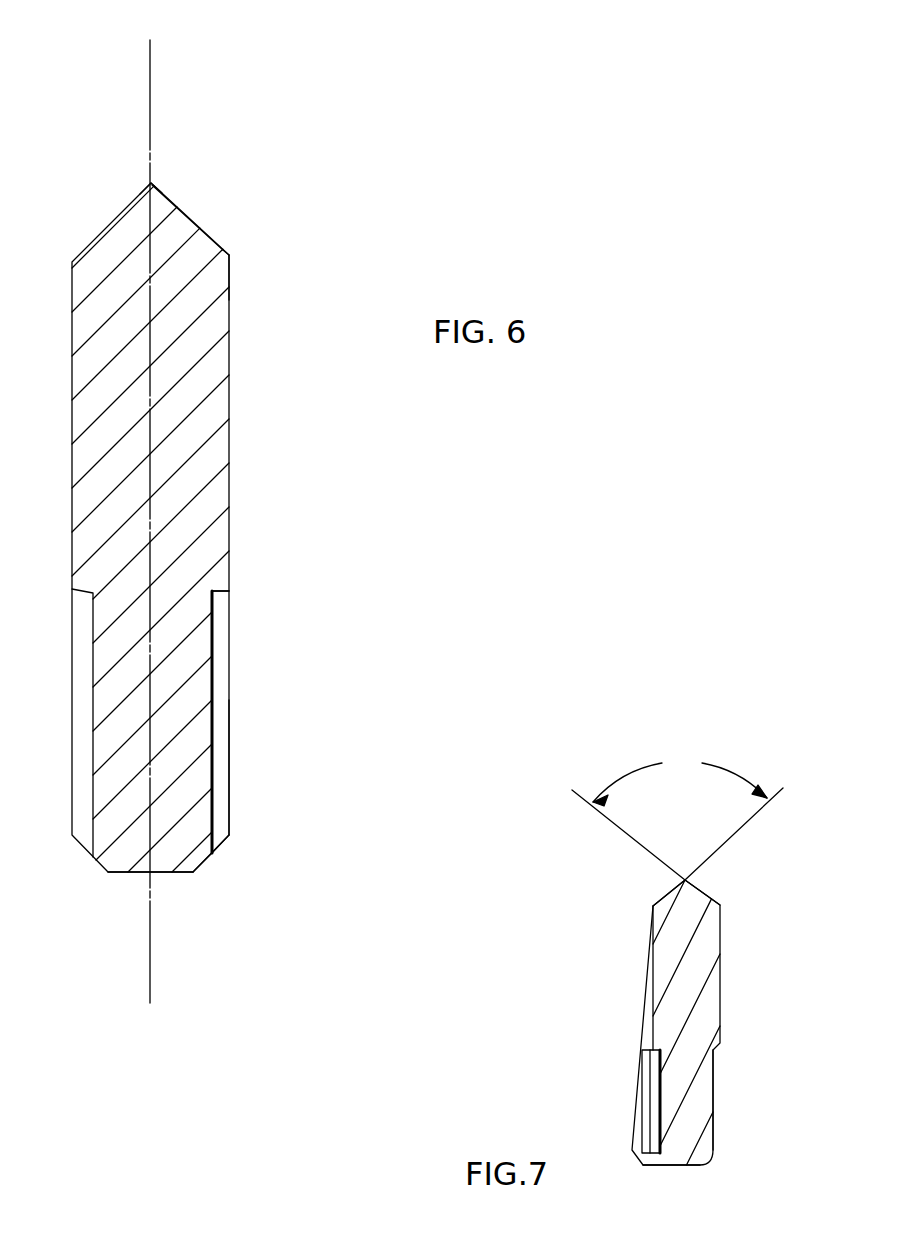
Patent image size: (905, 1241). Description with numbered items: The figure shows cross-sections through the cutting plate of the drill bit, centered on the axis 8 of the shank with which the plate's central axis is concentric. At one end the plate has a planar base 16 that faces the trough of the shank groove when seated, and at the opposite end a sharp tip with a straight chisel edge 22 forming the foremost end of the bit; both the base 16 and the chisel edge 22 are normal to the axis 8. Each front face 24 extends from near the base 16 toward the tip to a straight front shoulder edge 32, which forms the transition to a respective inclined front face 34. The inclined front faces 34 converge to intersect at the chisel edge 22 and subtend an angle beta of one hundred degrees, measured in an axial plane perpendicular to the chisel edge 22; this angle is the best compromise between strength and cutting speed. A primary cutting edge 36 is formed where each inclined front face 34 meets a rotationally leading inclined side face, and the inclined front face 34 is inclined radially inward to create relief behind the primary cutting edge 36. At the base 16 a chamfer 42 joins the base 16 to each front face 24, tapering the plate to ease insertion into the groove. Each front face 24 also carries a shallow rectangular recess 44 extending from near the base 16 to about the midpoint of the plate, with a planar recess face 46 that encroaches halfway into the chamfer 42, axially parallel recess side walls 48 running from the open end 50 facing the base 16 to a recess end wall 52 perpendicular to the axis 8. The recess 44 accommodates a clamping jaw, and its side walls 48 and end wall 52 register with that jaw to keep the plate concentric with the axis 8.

In FIG. 6, the axis 8 is at (206, 506).
In FIG. 6, the base 16 is at (122, 872).
In FIG. 7, the base 16 is at (680, 1167).
In FIG. 6, the chisel edge 22 is at (151, 183).
In FIG. 7, the chisel edge 22 is at (700, 874).
In FIG. 6, the front face 24 is at (229, 447).
In FIG. 7, the front face 24 is at (722, 1008).
In FIG. 6, the front shoulder edge 32 is at (232, 258).
In FIG. 6, the inclined front face 34 is at (226, 249).
In FIG. 7, the inclined front face 34 is at (663, 897).
In FIG. 6, the primary cutting edge 36 is at (213, 232).
In FIG. 6, the chamfer 42 is at (203, 867).
In FIG. 6, the recess 44 is at (252, 675).
In FIG. 6, the recess face 46 is at (215, 728).
In FIG. 7, the recess face 46 is at (713, 1103).
In FIG. 6, the recess side wall 48 is at (222, 805).
In FIG. 6, the open end 50 is at (222, 843).
In FIG. 6, the recess end wall 52 is at (222, 592).